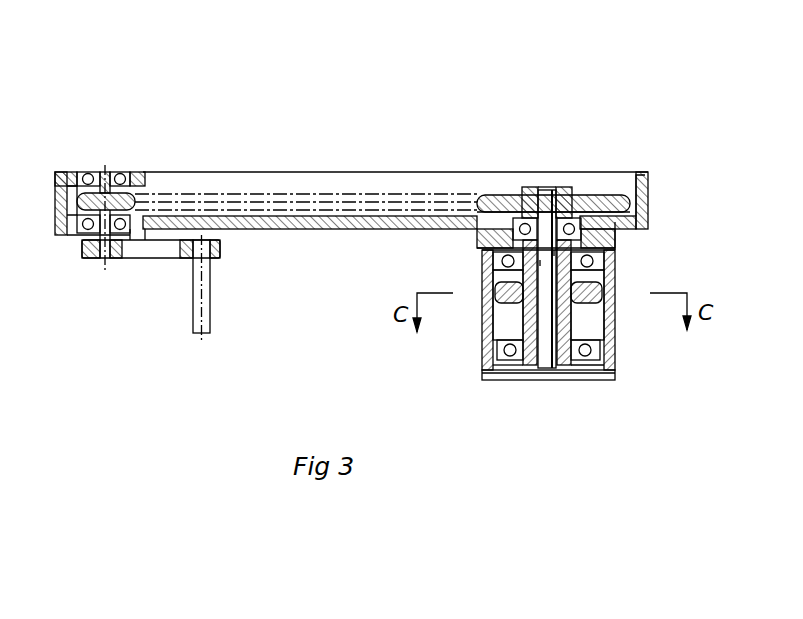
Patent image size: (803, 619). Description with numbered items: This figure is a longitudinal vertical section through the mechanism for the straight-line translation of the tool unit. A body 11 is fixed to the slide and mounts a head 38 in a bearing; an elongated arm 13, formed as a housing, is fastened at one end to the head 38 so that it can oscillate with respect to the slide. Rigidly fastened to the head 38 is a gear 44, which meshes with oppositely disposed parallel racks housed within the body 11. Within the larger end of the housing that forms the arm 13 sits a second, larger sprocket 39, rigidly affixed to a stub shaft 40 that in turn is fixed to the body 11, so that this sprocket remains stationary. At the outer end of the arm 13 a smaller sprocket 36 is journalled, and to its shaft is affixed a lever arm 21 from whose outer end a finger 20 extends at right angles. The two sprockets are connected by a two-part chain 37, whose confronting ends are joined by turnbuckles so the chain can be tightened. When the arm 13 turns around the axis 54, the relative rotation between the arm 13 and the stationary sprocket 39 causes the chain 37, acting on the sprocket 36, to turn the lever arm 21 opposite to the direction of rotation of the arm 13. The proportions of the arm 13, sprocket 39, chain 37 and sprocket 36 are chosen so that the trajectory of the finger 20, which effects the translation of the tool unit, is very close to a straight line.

The body 11 is at (613, 275).
The arm 13 is at (373, 222).
The finger 20 is at (203, 243).
The lever arm 21 is at (163, 250).
The sprocket 36 is at (100, 187).
The chain 37 is at (280, 200).
The head 38 is at (497, 223).
The sprocket 39 is at (515, 203).
The stub shaft 40 is at (542, 197).
The gear 44 is at (545, 263).
The axis 54 is at (555, 253).